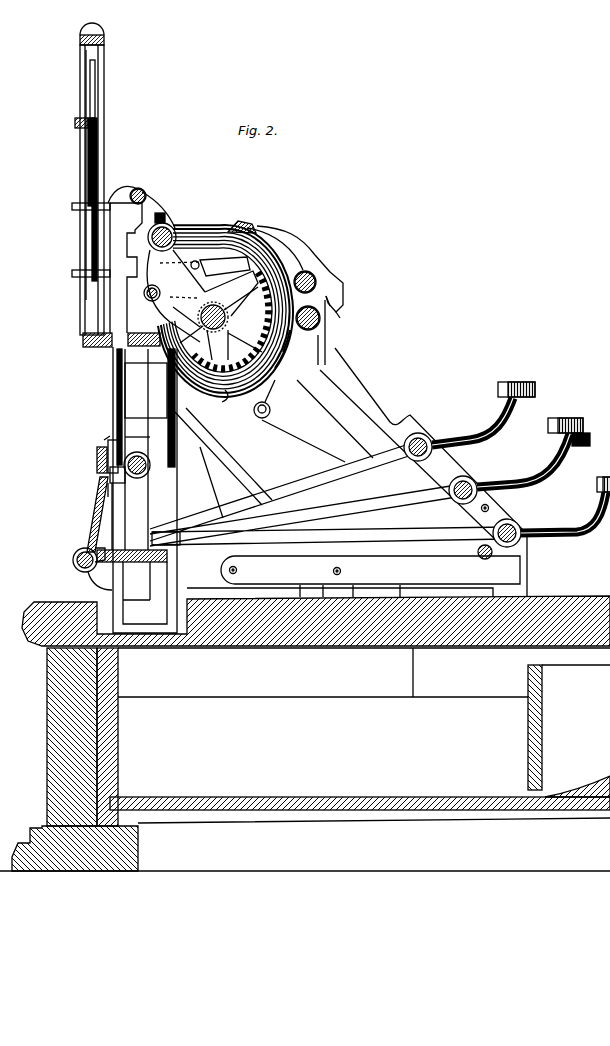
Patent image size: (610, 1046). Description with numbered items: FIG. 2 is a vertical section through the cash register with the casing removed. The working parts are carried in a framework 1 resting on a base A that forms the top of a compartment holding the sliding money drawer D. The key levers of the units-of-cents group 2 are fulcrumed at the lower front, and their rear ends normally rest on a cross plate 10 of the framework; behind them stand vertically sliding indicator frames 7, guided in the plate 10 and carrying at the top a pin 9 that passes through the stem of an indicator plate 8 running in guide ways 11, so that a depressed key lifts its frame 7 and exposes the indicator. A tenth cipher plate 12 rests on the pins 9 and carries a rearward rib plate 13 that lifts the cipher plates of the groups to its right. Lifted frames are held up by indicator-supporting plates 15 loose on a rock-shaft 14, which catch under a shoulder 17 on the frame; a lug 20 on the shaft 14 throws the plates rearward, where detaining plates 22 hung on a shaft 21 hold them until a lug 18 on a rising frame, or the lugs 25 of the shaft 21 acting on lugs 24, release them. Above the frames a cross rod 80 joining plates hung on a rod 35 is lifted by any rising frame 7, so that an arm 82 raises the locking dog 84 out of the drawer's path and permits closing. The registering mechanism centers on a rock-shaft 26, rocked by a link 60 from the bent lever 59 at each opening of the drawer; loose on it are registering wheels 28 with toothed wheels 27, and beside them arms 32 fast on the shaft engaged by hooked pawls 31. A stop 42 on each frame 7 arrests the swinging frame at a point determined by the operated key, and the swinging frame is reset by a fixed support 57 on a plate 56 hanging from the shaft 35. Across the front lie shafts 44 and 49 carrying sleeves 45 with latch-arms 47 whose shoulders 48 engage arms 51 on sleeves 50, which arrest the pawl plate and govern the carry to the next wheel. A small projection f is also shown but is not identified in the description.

The framework 1 is at (376, 423).
The group of key levers 2 is at (536, 389).
The indicator frame 7 is at (180, 512).
The indicator plate 8 is at (96, 95).
The pin 9 is at (74, 207).
The cross plate 10 is at (93, 345).
The guide way 11 is at (105, 38).
The cipher indicator plate 12 is at (84, 86).
The rib plate 13 is at (77, 126).
The rock-shaft 14 is at (73, 561).
The indicator-supporting plate 15 is at (90, 515).
The shoulder 17 is at (123, 500).
The lug 18 is at (110, 438).
The lug 20 is at (92, 552).
The shaft 21 is at (137, 452).
The detaining plate 22 is at (96, 456).
The lug 24 is at (108, 444).
The lug 25 is at (122, 480).
The rock-shaft 26 is at (228, 317).
The toothed wheel 27 is at (292, 340).
The registering wheel 28 is at (292, 356).
The pawl 31 is at (248, 252).
The arm 32 is at (232, 290).
The rod 35 is at (170, 228).
The stop 42 is at (197, 423).
The shaft 44 is at (318, 280).
The sleeve 45 is at (307, 272).
The latch-arm 47 is at (336, 290).
The shoulder 48 is at (344, 293).
The shaft 49 is at (324, 338).
The sleeve 50 is at (321, 323).
The arm 51 is at (330, 308).
The plate 56 is at (218, 393).
The fixed support 57 is at (168, 320).
The bent lever 59 is at (286, 449).
The link 60 is at (271, 410).
The cross rod 80 is at (144, 195).
The arm 82 is at (353, 576).
The locking dog 84 is at (290, 650).
The base A is at (580, 600).
The money drawer D is at (511, 727).
The projection f is at (240, 224).